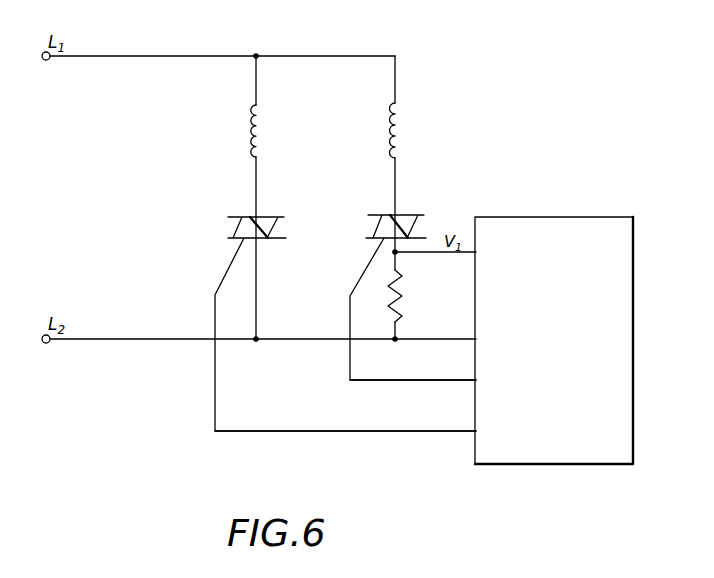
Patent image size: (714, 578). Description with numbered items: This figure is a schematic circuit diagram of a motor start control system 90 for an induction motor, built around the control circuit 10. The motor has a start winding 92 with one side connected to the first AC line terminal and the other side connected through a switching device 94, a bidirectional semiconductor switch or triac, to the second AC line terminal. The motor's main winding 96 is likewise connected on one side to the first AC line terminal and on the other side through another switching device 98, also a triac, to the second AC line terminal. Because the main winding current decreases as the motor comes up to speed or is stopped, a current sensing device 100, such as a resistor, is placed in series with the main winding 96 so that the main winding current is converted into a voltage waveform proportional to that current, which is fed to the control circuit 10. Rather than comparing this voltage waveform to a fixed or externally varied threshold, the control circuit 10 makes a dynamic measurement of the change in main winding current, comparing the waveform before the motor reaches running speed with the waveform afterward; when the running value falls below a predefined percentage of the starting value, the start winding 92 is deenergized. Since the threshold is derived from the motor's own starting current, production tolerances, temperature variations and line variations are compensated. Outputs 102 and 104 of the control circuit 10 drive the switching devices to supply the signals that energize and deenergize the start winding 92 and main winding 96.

The control circuit 10 is at (597, 217).
The motor start control system 90 is at (522, 146).
The start winding 92 is at (259, 108).
The switching device 94 is at (268, 217).
The main winding 96 is at (399, 103).
The switching device 98 is at (408, 215).
The current sensing device 100 is at (402, 306).
The output 102 is at (476, 379).
The output 104 is at (476, 431).